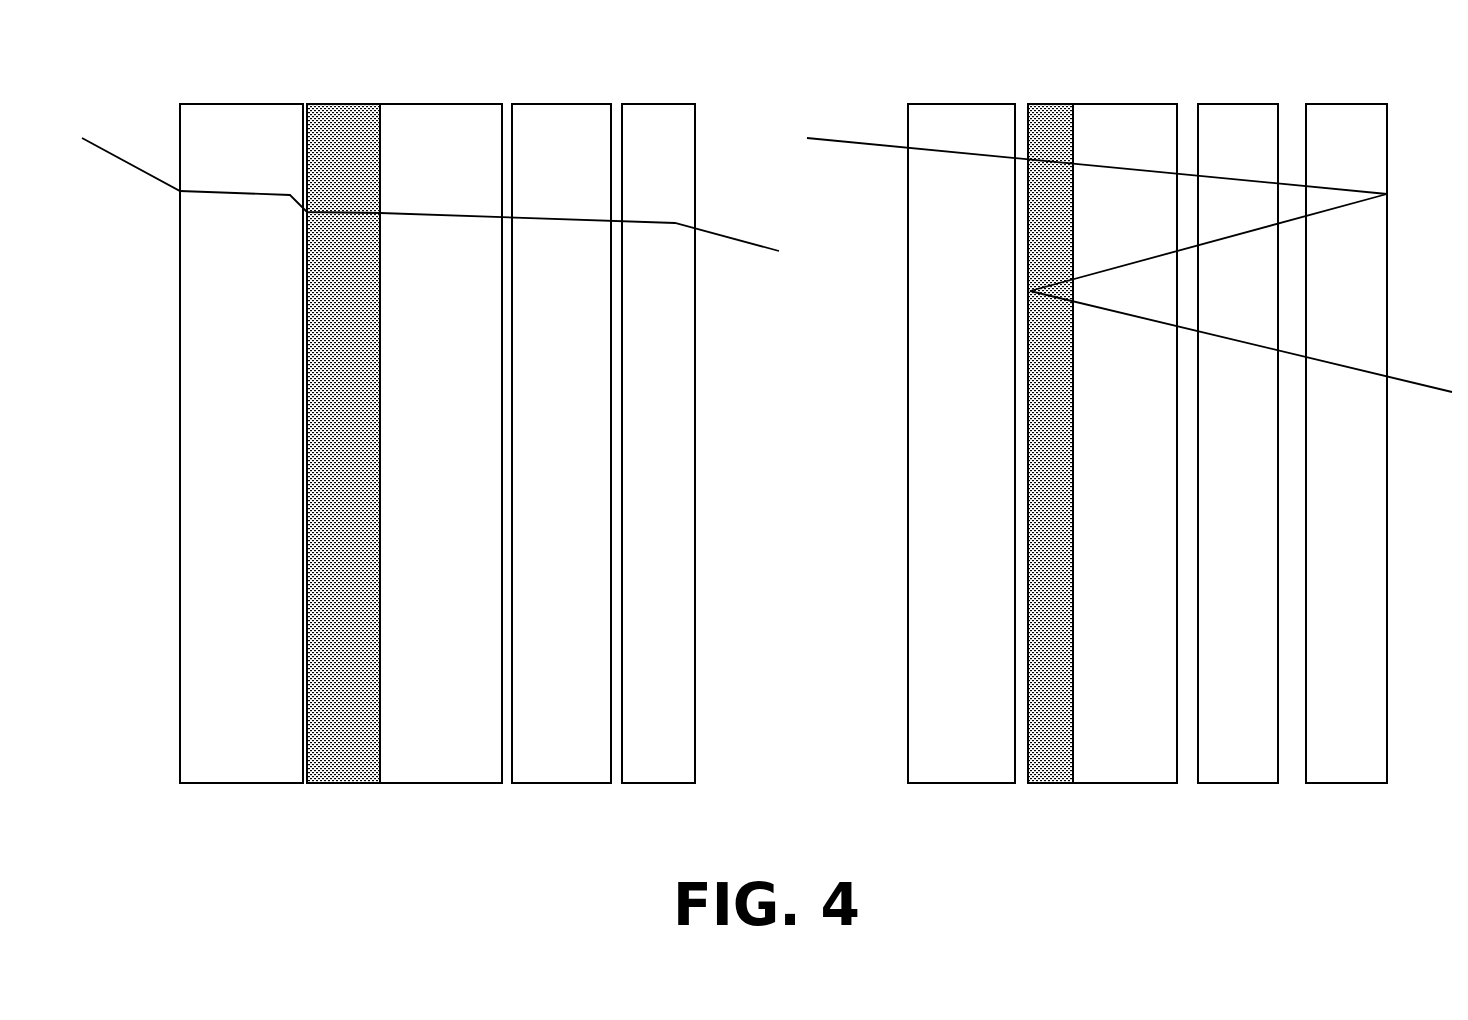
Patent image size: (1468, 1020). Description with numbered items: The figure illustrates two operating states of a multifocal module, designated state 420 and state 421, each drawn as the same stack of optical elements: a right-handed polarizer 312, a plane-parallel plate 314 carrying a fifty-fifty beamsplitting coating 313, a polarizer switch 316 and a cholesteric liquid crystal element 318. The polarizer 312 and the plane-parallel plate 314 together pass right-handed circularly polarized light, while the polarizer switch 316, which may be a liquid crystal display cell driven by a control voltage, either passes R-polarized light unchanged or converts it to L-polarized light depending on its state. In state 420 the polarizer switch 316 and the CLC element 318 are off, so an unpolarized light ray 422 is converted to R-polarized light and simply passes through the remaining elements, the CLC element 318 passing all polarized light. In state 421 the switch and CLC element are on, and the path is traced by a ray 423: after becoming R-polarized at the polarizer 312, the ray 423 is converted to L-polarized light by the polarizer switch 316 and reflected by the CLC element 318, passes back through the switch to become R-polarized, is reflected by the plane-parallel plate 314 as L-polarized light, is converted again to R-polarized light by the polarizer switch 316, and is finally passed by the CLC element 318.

The right-handed polarizer 312 is at (255, 480).
The 50/50 beamsplitting coating 313 is at (358, 466).
The plane-parallel plate 314 is at (455, 491).
The polarizer switch 316 is at (577, 466).
The cholesteric liquid crystal (CLC) element 318 is at (673, 466).
The state 420 is at (185, 833).
The state 421 is at (962, 833).
The unpolarized light ray 422 is at (103, 148).
The ray 423 is at (854, 140).